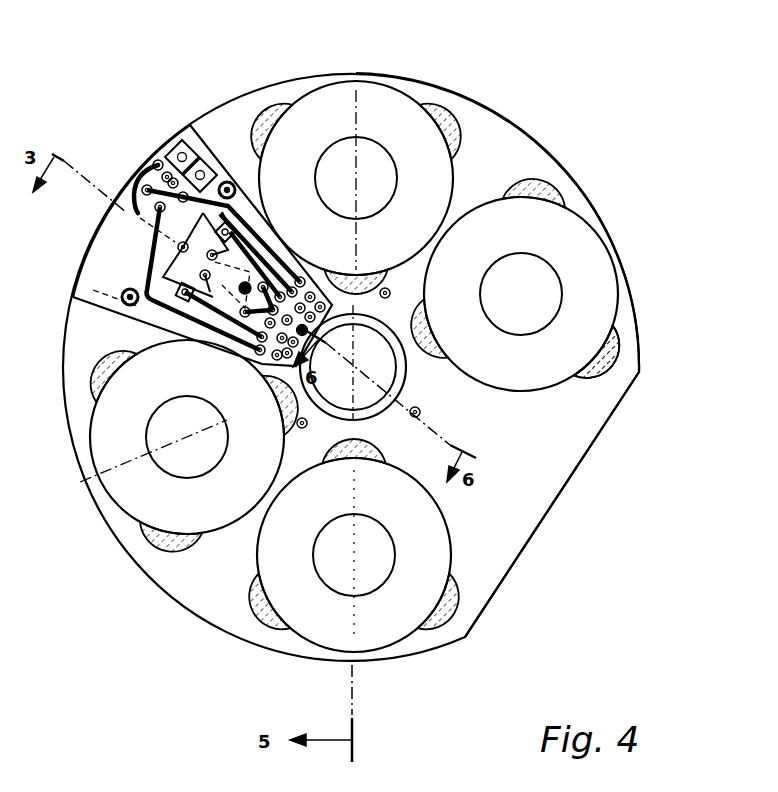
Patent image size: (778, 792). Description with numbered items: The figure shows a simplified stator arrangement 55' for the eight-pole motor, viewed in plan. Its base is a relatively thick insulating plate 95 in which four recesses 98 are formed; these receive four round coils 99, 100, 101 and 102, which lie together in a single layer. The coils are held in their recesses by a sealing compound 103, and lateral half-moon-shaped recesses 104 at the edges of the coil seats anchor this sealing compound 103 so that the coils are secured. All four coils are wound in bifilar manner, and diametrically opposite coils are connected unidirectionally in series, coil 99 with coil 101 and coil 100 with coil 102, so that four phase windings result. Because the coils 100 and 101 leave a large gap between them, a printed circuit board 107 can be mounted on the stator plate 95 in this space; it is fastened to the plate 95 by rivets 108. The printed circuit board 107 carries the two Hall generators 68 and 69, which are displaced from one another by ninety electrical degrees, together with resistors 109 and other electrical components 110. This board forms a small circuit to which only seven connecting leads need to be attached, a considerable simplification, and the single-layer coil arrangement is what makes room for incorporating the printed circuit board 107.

The stator arrangement 55' is at (351, 367).
The insulating plate 95 is at (537, 497).
The recesses 98 is at (595, 207).
The round coil 99 is at (590, 240).
The round coil 100 is at (390, 98).
The round coil 101 is at (98, 442).
The round coil 102 is at (318, 630).
The sealing compound 103 is at (613, 343).
The half-moon-shaped recesses 104 is at (537, 187).
The printed circuit board 107 is at (107, 223).
The rivets 108 is at (122, 298).
The resistors 109 is at (130, 227).
The electrical components 110 is at (206, 165).
The Hall generator 69 is at (250, 224).
The Hall generator 68 is at (178, 305).